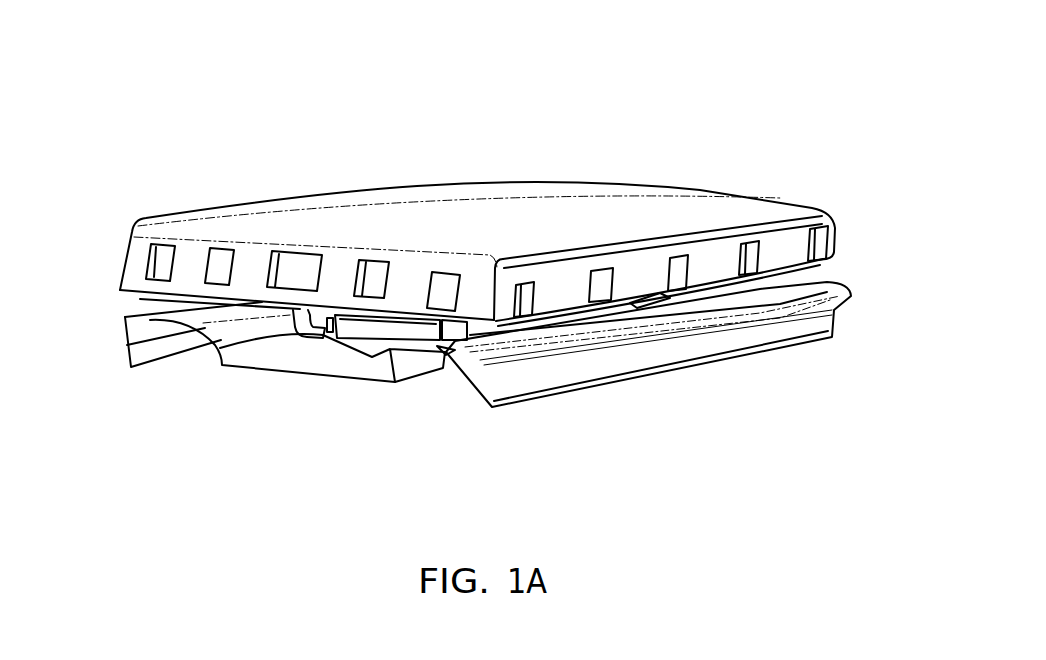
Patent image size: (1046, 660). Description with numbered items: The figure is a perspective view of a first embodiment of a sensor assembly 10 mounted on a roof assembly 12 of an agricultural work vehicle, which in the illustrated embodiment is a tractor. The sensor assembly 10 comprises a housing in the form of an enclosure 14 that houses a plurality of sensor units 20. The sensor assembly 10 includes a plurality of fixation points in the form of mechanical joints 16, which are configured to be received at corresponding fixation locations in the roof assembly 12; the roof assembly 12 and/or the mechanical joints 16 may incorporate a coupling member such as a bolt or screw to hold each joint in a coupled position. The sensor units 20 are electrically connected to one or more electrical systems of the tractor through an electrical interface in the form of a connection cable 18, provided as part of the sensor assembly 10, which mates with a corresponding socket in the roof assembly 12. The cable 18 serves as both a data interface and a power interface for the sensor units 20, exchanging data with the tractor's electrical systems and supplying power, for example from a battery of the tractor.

The sensor assembly 10 is at (628, 152).
The roof assembly 12 is at (820, 343).
The enclosure 14 is at (790, 200).
The mechanical joints 16 is at (293, 332).
The connection cable 18 is at (340, 345).
The sensor units 20 is at (443, 272).